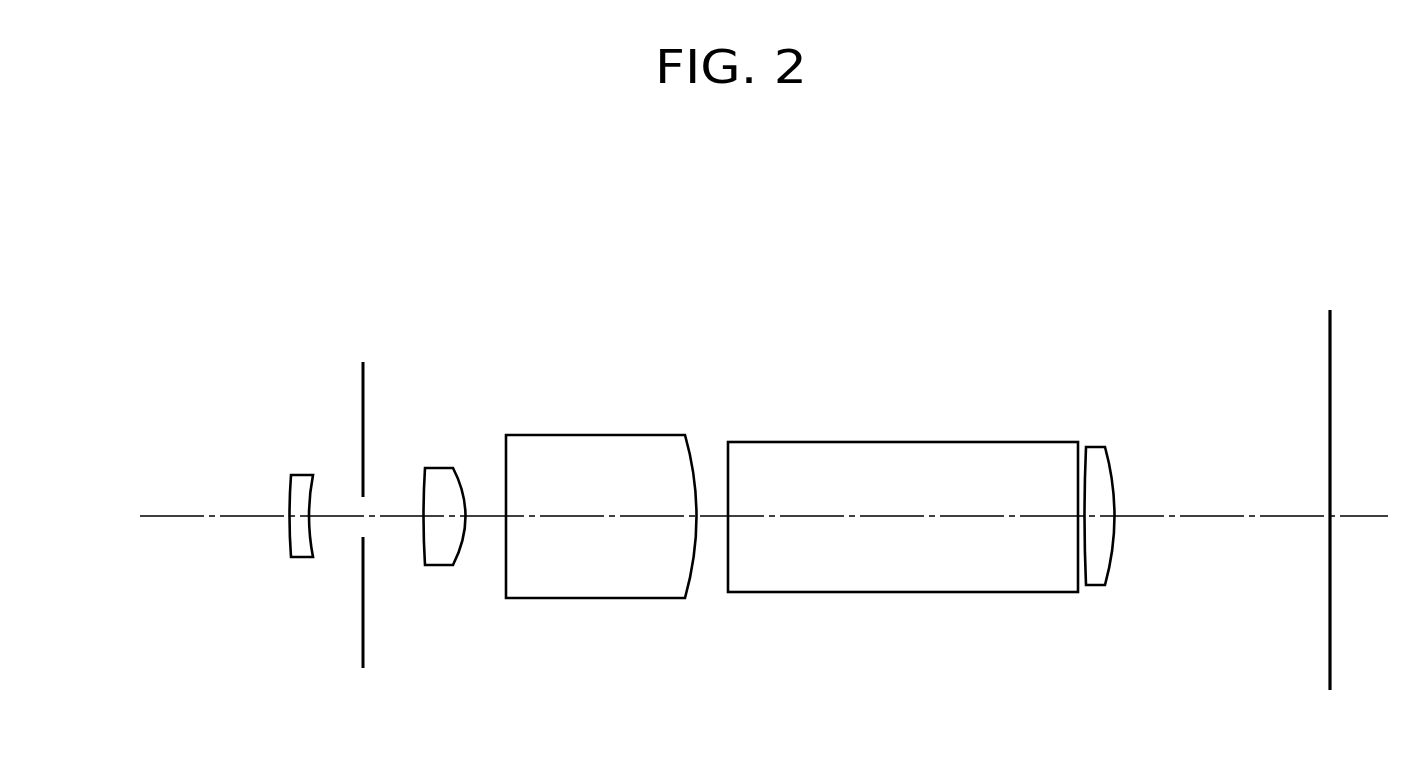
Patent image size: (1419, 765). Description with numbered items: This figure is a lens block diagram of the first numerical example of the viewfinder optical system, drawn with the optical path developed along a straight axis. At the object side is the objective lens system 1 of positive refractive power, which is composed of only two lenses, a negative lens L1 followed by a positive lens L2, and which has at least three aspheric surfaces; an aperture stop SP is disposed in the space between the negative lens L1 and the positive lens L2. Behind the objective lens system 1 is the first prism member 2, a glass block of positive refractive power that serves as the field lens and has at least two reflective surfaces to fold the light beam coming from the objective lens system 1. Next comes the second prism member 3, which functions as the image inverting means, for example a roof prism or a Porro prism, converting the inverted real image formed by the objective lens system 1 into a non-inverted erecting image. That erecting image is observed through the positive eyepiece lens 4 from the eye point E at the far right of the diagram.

The objective lens system 1 is at (460, 331).
The first prism member 2 is at (690, 329).
The second prism member 3 is at (1077, 329).
The eyepiece lens 4 is at (1127, 329).
The aperture stop SP is at (364, 423).
The negative lens L1 is at (281, 674).
The positive lens L2 is at (470, 674).
The eye point E is at (1330, 516).